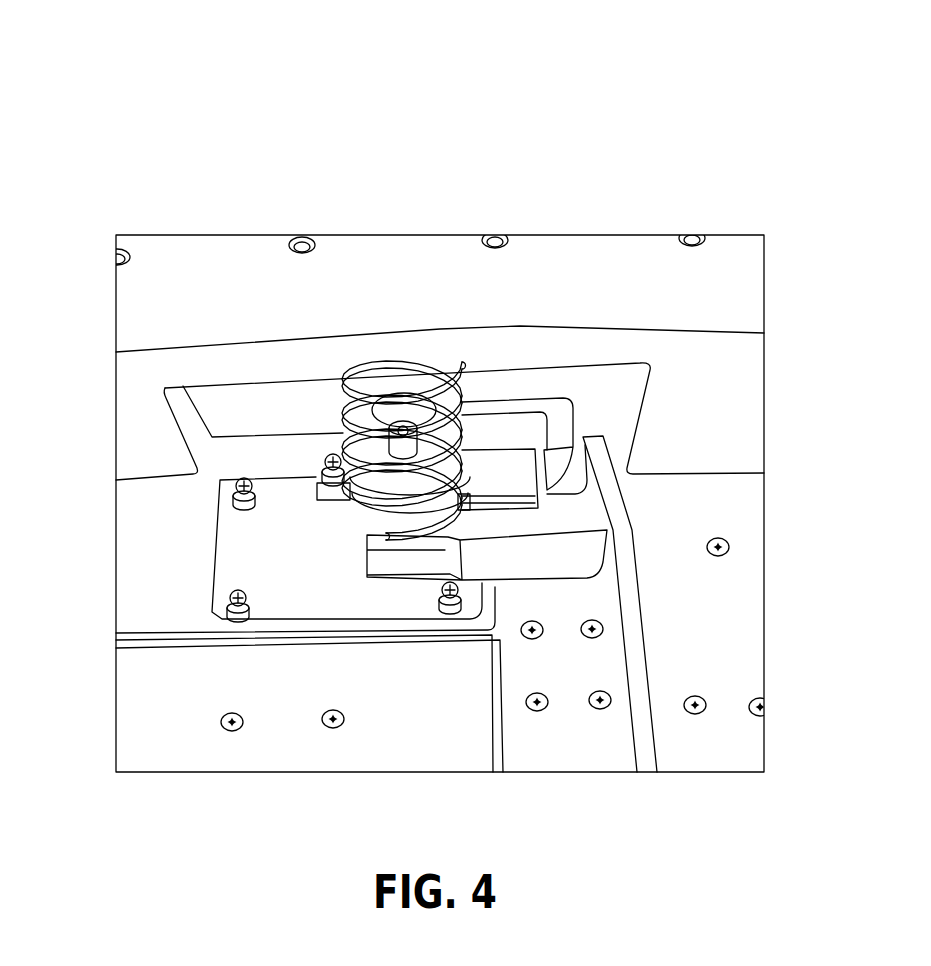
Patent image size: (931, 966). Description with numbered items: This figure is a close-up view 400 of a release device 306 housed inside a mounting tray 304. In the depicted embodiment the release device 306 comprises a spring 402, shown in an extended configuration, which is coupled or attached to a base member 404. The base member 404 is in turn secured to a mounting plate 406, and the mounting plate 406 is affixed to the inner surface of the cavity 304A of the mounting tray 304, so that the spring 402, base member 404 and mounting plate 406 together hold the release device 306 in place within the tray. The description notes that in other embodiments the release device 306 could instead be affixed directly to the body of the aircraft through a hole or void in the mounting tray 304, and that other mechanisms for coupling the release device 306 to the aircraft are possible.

The spring mounting assembly 400 is at (660, 96).
The mounting tray 304 is at (117, 331).
The cavity 304A is at (166, 705).
The release device 306 is at (443, 351).
The spring 402 is at (336, 411).
The base member 404 is at (413, 554).
The mounting plate 406 is at (212, 553).